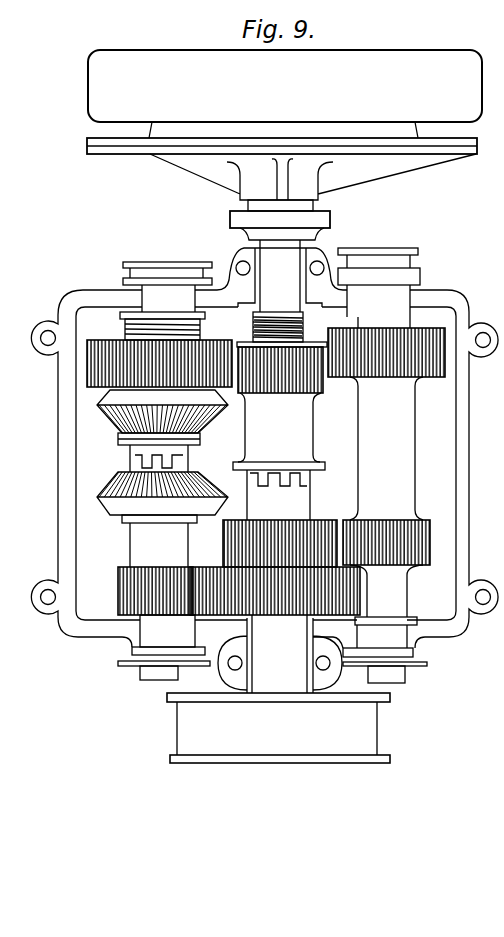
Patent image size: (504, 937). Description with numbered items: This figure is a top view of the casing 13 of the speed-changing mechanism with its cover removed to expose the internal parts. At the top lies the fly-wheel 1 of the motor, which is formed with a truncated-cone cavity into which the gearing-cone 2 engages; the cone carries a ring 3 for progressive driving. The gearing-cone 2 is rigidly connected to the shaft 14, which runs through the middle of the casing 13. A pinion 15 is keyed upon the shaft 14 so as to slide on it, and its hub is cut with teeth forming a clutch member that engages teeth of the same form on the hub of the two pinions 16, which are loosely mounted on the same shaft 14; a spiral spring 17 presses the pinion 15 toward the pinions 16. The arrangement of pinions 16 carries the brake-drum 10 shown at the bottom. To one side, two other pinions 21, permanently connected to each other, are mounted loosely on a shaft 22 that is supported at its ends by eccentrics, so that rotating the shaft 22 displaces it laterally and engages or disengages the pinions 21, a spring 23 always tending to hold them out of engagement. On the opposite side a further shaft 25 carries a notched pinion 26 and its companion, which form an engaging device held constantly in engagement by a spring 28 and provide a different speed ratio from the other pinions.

The fly-wheel 1 is at (285, 94).
The gearing-cone 2 is at (254, 197).
The ring 3 is at (291, 149).
The brake-drum 10 is at (278, 728).
The casing 13 is at (264, 470).
The shaft 14 is at (278, 291).
The pinion 15 is at (280, 454).
The pinions 16 is at (275, 630).
The spiral spring 17 is at (305, 321).
The pinions 21 is at (386, 384).
The shaft 22 is at (212, 340).
The spring 23 is at (112, 669).
The shaft 25 is at (161, 624).
The pinion 26 is at (178, 546).
The spring 28 is at (121, 334).